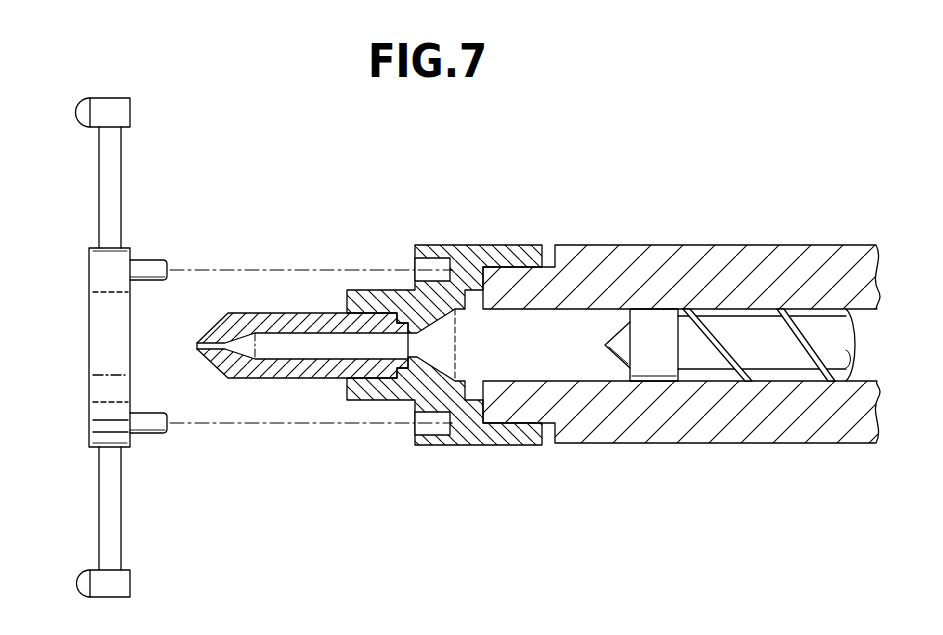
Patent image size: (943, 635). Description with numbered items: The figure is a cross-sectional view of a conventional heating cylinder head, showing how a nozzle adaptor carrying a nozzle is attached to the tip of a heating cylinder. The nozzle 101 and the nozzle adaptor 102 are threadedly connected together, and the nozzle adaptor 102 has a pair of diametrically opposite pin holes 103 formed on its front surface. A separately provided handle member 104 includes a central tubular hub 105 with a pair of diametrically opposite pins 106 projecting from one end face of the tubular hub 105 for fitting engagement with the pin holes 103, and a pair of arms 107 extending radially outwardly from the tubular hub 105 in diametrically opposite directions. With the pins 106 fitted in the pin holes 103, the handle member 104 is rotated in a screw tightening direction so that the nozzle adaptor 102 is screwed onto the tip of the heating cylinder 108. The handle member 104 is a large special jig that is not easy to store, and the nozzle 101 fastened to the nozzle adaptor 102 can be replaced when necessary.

The nozzle 101 is at (272, 313).
The nozzle adaptor 102 is at (458, 245).
The pin holes 103 is at (415, 262).
The handle member 104 is at (135, 94).
The tubular hub 105 is at (108, 348).
The pins 106 is at (150, 266).
The arms 107 is at (108, 184).
The heating cylinder 108 is at (707, 255).